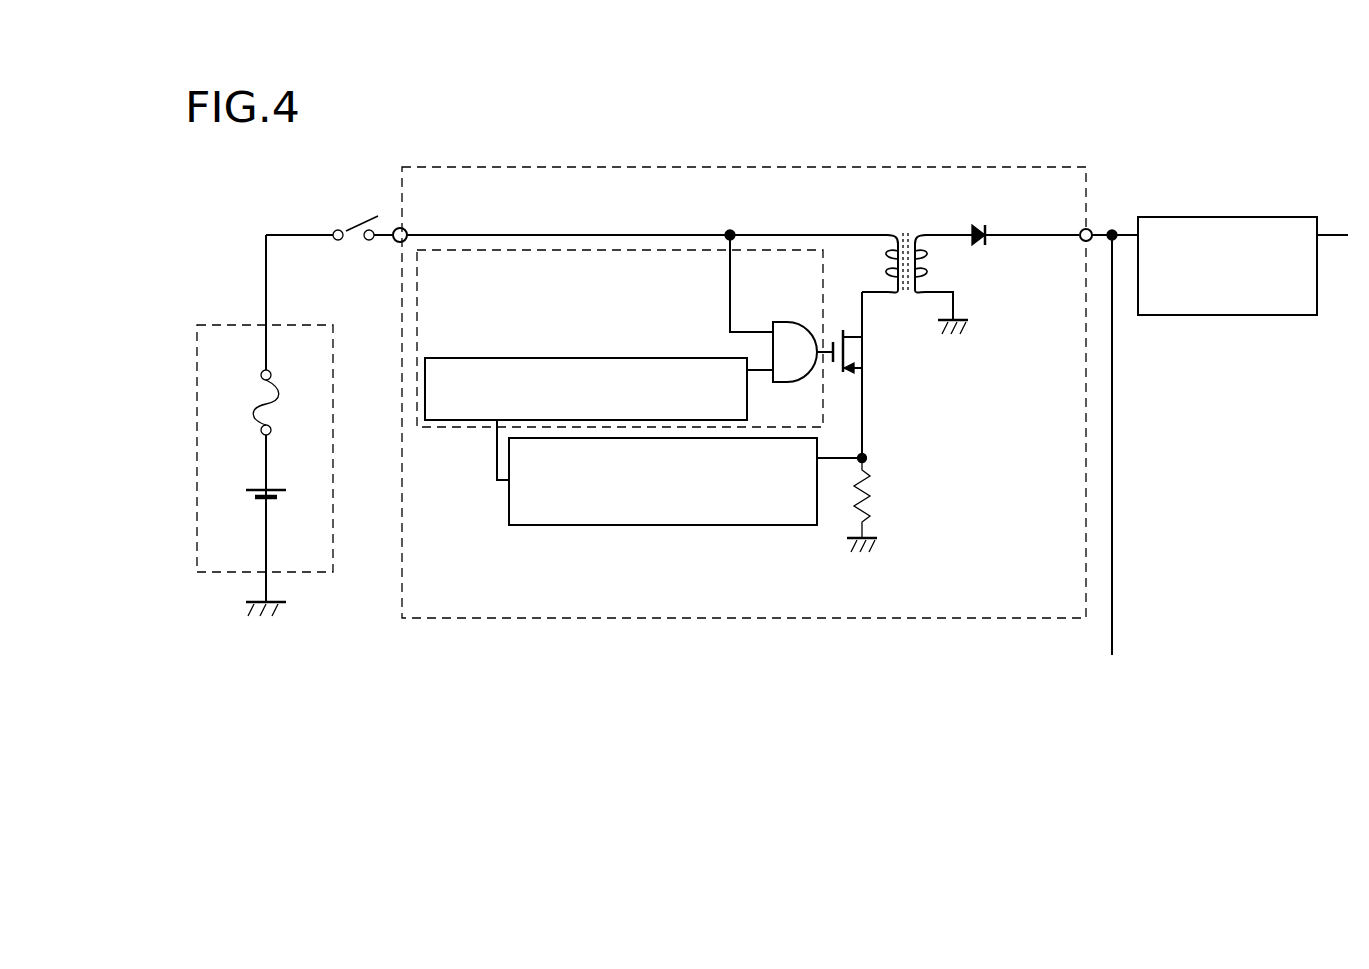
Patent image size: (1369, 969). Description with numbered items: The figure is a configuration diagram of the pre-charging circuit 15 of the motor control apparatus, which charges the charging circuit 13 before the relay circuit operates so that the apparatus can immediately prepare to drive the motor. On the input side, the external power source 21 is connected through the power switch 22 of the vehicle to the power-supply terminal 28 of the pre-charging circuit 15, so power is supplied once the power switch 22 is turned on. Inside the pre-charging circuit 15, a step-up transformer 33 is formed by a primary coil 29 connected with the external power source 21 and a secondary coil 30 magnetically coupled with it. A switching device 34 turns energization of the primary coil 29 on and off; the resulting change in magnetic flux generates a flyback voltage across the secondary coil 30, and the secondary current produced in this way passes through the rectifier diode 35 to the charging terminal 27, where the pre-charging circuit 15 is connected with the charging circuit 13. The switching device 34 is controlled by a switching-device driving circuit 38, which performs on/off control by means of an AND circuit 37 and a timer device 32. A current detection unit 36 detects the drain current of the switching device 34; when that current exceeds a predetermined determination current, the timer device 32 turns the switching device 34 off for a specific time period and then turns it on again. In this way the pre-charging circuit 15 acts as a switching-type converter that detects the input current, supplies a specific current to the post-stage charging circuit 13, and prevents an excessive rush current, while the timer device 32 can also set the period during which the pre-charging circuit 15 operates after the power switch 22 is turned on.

The charging circuit 13 is at (1170, 217).
The pre-charging circuit 15 is at (452, 167).
The external power source 21 is at (233, 325).
The power switch 22 is at (352, 215).
The charging terminal 27 is at (1092, 226).
The power-supply terminal 28 is at (395, 226).
The primary coil 29 is at (880, 222).
The secondary coil 30 is at (916, 222).
The timer device 32 is at (662, 357).
The step-up transformer 33 is at (917, 277).
The switching device 34 is at (870, 355).
The rectifier diode 35 is at (985, 218).
The current detection unit 36 is at (760, 525).
The AND circuit 37 is at (803, 322).
The switching-device driving circuit 38 is at (455, 430).